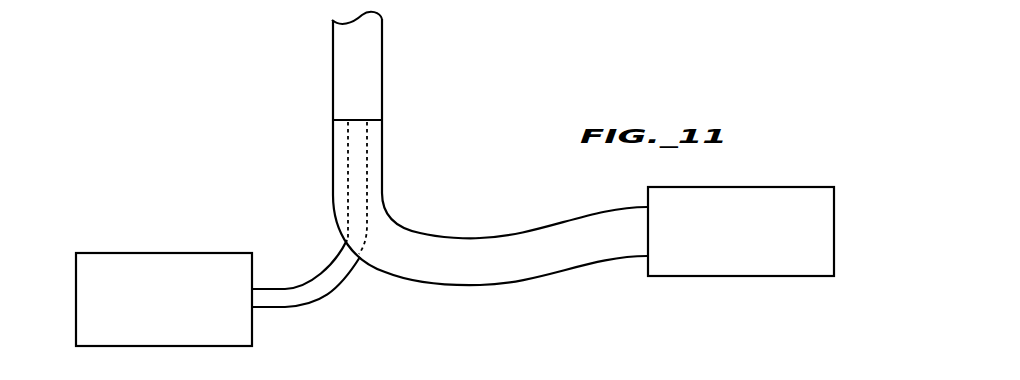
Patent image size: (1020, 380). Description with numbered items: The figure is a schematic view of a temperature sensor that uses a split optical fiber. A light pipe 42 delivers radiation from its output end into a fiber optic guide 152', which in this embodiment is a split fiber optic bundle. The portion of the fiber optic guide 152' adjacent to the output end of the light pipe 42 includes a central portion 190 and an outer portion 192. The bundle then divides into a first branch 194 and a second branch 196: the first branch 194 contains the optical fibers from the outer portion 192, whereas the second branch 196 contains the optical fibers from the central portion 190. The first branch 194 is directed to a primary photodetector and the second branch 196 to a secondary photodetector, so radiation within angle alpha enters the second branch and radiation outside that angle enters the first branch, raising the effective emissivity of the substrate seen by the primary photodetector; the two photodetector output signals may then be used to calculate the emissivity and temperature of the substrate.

The light pipe 42 is at (382, 75).
The fiber optic guide 152' is at (407, 202).
The central portion 190 is at (358, 139).
The outer portion 192 is at (338, 168).
The first branch 194 is at (493, 250).
The second branch 196 is at (307, 283).